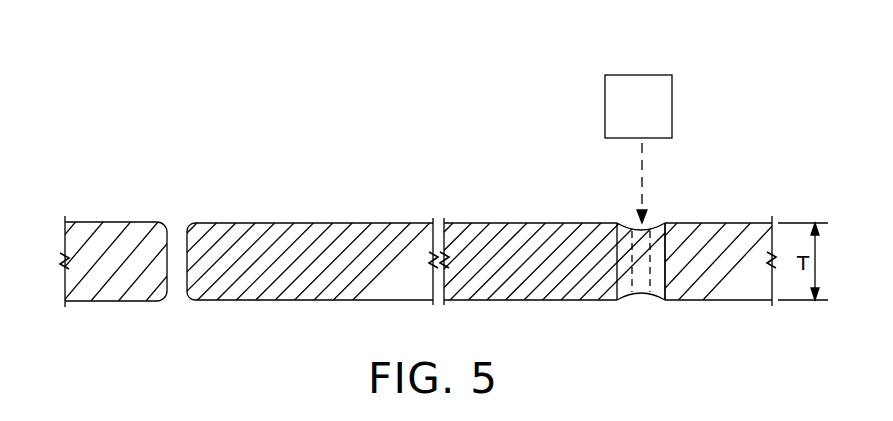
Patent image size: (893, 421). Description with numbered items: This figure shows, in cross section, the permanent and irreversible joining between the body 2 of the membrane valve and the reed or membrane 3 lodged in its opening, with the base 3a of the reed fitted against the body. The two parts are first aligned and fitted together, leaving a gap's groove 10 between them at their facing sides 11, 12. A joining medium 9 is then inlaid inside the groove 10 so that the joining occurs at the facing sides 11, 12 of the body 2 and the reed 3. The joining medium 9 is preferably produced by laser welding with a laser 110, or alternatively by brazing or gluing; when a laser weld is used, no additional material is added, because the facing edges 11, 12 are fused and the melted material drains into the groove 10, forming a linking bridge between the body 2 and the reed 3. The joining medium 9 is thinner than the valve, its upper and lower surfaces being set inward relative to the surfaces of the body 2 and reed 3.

The body 2 is at (113, 235).
The reed or membrane 3 is at (321, 223).
The base 3a is at (498, 230).
The joining medium 9 is at (643, 297).
The gap's groove 10 is at (178, 237).
The facing side 11 is at (167, 262).
The facing side 12 is at (187, 292).
The laser 110 is at (645, 80).